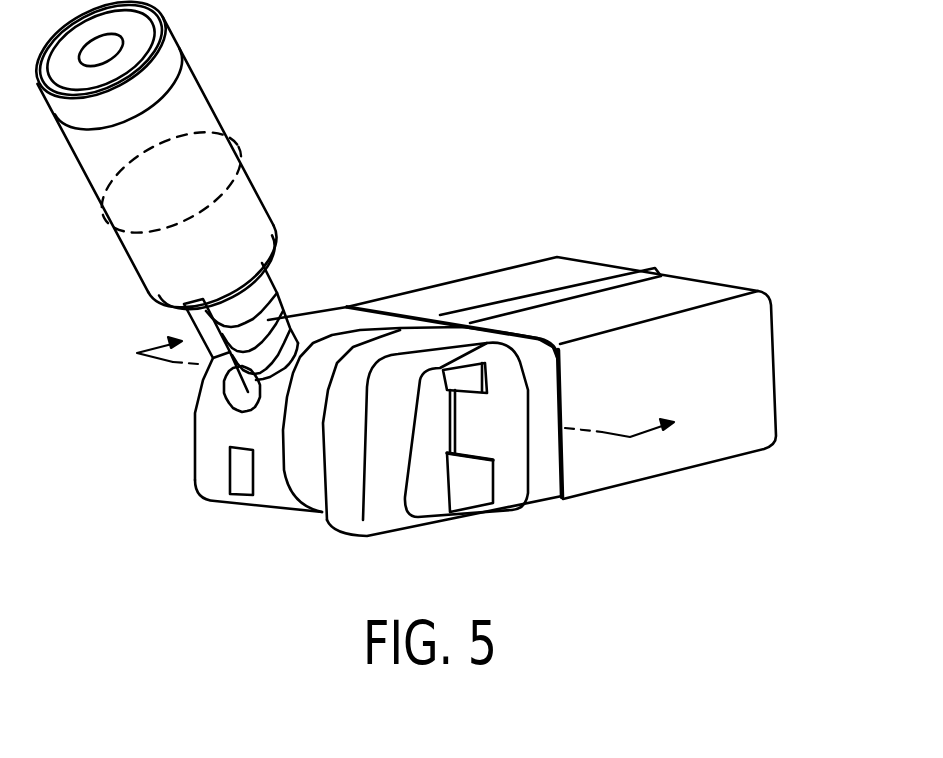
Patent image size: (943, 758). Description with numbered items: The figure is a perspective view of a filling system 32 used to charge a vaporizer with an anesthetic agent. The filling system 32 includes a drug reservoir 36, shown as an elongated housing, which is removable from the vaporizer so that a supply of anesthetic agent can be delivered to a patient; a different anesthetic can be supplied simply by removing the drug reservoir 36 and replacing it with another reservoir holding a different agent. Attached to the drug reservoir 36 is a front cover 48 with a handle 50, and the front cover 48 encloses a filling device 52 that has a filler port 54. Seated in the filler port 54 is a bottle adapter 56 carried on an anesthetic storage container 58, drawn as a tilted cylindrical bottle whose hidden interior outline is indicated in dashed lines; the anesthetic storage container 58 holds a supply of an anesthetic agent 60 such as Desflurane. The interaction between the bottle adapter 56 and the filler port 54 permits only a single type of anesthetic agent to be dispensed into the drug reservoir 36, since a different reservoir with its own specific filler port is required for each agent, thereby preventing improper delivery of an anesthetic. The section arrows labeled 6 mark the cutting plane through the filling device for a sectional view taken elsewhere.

The filling system 32 is at (441, 203).
The drug reservoir 36 is at (568, 272).
The front cover 48 is at (547, 446).
The handle 50 is at (383, 517).
The filling device 52 is at (331, 326).
The filler port 54 is at (243, 377).
The bottle adapter 56 is at (282, 308).
The anesthetic storage container 58 is at (197, 110).
The anesthetic agent 60 is at (253, 188).
The section line 6- 6 is at (407, 385).